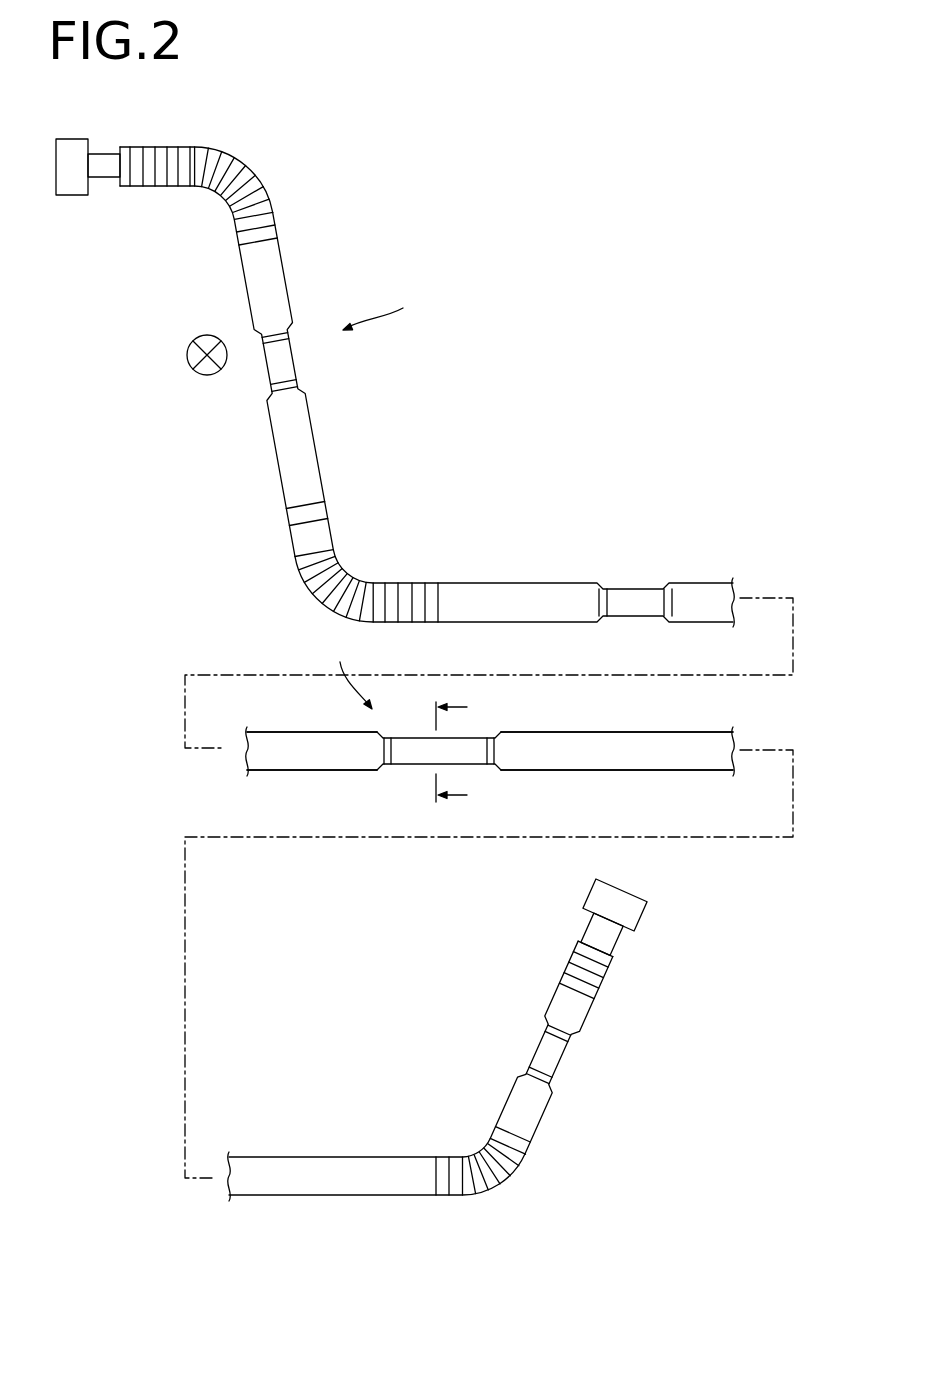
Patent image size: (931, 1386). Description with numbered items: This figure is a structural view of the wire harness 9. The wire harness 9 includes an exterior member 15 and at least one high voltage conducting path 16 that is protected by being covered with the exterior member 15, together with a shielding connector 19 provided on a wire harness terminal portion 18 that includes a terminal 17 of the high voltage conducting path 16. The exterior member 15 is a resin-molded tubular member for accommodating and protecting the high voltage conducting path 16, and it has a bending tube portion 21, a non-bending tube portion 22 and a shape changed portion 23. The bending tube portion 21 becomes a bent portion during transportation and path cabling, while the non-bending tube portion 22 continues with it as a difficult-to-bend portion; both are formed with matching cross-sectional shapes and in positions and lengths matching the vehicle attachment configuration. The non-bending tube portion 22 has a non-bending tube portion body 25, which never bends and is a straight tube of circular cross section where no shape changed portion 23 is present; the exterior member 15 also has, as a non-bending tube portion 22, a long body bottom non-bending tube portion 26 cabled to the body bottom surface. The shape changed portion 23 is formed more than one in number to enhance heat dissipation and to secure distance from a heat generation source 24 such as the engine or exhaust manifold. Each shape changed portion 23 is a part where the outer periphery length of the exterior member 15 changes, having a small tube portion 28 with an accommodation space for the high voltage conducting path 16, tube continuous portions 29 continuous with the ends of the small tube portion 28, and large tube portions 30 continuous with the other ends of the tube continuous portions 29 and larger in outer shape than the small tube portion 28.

The wire harness 9 is at (483, 427).
The exterior member 15 is at (317, 462).
The high voltage conducting path 16 is at (626, 940).
The terminal 17 is at (384, 521).
The wire harness terminal portion 18 is at (112, 179).
The shielding connector 19 is at (73, 188).
The bending tube portion 21 is at (232, 168).
The non-bending tube portion 22 is at (276, 253).
The shape changed portion 23 is at (296, 355).
The heat generation source 24 is at (187, 355).
The non-bending tube portion body 25 is at (240, 267).
The body bottom non-bending tube portion 26 is at (711, 591).
The small tube portion 28 is at (268, 364).
The tube continuous portion 29 is at (281, 323).
The large tube portion 30 is at (262, 306).